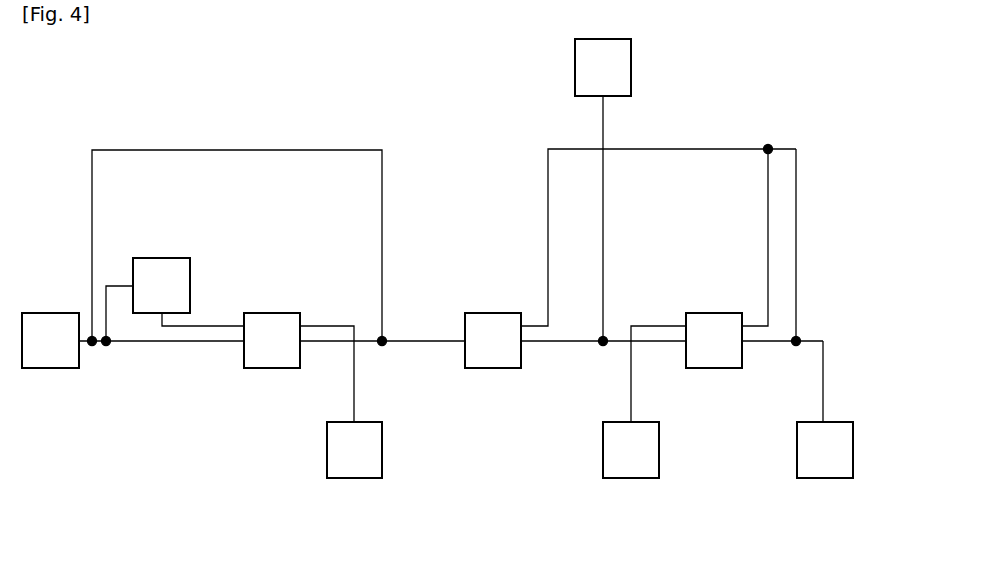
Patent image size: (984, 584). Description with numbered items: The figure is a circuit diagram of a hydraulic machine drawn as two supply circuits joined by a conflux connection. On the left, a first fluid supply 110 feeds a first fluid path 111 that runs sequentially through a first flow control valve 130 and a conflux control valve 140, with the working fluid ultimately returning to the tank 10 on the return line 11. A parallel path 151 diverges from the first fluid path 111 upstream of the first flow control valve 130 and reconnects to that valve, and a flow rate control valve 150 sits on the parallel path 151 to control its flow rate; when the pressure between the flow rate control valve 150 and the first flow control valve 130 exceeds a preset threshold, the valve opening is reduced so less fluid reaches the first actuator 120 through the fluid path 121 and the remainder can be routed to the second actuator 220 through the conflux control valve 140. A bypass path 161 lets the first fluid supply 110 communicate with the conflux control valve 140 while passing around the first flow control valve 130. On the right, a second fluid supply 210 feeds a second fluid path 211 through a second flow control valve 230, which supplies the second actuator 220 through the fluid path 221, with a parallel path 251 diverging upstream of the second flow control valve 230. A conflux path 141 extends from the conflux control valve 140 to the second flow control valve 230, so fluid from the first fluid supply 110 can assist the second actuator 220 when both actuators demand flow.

The tank 10 is at (603, 67).
The return line 11 is at (603, 225).
The first fluid supply 110 is at (50, 340).
The first fluid path 111 is at (167, 341).
The first actuator 120 is at (354, 450).
The fluid path 121 is at (354, 389).
The first flow control valve 130 is at (272, 340).
The conflux control valve 140 is at (493, 340).
The conflux path 141 is at (548, 285).
The flow rate control valve 150 is at (161, 285).
The parallel path 151 is at (110, 283).
The bypass path 161 is at (134, 150).
The second fluid supply 210 is at (825, 450).
The second fluid path 211 is at (807, 337).
The second actuator 220 is at (631, 450).
The fluid path 221 is at (631, 395).
The second flow control valve 230 is at (714, 340).
The parallel path 251 is at (797, 230).